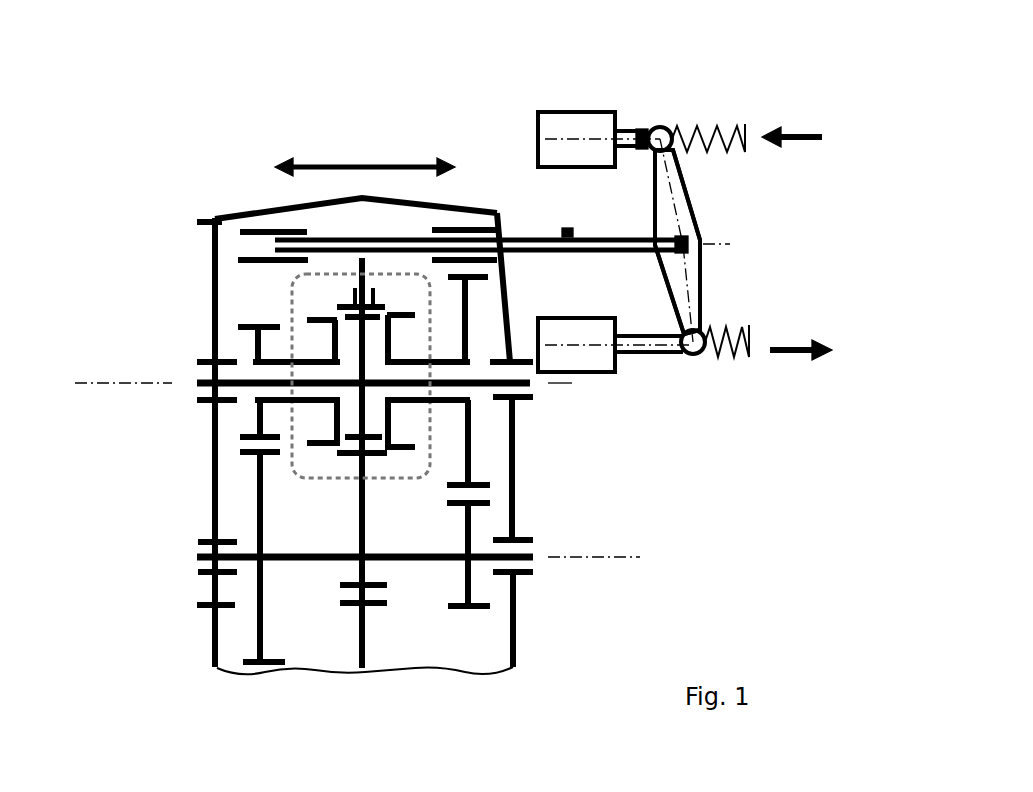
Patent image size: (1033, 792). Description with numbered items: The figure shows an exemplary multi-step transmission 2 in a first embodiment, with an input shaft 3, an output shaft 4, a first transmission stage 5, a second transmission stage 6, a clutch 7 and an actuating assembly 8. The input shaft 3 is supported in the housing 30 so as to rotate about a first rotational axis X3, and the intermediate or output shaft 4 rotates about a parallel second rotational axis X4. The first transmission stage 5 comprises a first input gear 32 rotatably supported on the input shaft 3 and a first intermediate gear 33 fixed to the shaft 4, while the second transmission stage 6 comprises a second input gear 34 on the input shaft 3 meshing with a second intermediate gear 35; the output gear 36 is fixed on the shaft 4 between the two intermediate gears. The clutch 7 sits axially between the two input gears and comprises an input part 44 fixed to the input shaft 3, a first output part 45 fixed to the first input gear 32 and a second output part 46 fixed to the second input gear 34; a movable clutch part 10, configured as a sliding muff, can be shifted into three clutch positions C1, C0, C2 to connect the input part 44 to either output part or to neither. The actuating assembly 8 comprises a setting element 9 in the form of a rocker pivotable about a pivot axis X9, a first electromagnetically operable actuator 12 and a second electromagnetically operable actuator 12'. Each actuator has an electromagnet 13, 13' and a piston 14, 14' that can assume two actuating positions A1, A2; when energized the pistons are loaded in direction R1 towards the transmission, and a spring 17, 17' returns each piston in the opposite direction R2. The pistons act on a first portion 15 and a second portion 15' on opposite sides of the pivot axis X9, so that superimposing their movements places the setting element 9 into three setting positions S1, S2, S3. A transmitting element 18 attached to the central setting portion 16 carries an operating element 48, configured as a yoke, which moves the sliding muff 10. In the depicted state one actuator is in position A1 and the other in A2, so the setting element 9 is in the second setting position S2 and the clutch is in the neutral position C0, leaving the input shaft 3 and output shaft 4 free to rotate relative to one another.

The multi-step transmission 2 is at (190, 80).
The input shaft 3 is at (243, 370).
The output shaft 4 is at (250, 556).
The first transmission stage 5 is at (242, 465).
The second transmission stage 6 is at (497, 497).
The clutch 7 is at (333, 298).
The actuating assembly 8 is at (684, 80).
The setting element 9 is at (690, 187).
The movable clutch part 10 is at (350, 290).
The first electromagnetically operable actuator 12 is at (599, 105).
The second electromagnetically operable actuator 12' is at (614, 380).
The electromagnet 13 is at (549, 115).
The electromagnet 13' is at (590, 393).
The piston 14 is at (622, 96).
The piston 14' is at (649, 402).
The first portion 15 is at (684, 110).
The second portion 15' is at (709, 399).
The setting portion 16 is at (700, 238).
The spring 17 is at (717, 105).
The spring 17' is at (737, 377).
The transmitting element 18 is at (418, 242).
The housing 30 is at (512, 308).
The first input gear 32 is at (240, 434).
The first intermediate gear 33 is at (258, 633).
The second input gear 34 is at (467, 458).
The second intermediate gear 35 is at (478, 610).
The output gear 36 is at (387, 582).
The input part 44 is at (248, 400).
The first output part 45 is at (318, 447).
The second output part 46 is at (403, 445).
The operating element 48 is at (368, 276).
The first rotational axis X3 is at (87, 383).
The second rotational axis X4 is at (630, 557).
The pivot axis X9 is at (703, 256).
The first actuating position A1 is at (645, 100).
The second actuating position A2 is at (685, 377).
The first setting position S1 is at (633, 217).
The second setting position S2 is at (683, 272).
The third setting position S3 is at (718, 217).
The direction R1 is at (792, 125).
The direction R2 is at (801, 338).
The neutral clutch position C0 is at (365, 147).
The first clutch position C1 is at (306, 132).
The second clutch position C2 is at (426, 132).